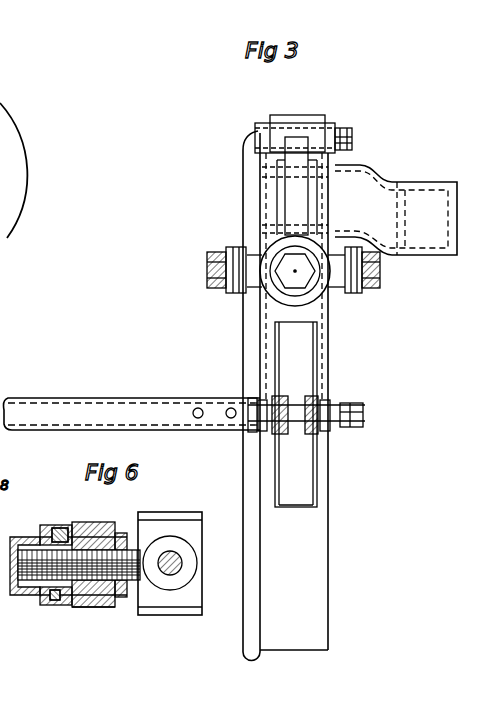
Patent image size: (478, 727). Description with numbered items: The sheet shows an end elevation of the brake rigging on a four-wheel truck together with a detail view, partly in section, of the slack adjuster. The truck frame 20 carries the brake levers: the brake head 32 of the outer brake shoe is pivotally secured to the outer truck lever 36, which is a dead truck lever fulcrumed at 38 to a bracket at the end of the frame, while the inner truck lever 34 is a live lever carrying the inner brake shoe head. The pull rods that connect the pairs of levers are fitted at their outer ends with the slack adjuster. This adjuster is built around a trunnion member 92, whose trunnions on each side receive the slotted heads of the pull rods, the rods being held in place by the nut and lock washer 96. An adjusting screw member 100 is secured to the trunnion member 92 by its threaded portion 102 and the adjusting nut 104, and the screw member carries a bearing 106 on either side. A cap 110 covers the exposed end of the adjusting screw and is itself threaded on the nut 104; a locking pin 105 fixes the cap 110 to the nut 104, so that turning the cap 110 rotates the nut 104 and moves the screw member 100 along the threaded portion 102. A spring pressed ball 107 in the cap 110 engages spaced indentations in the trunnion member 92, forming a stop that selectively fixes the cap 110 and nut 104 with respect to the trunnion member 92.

In FIG. 3, the truck frame 20 is at (425, 185).
In FIG. 3, the brake head 32 is at (305, 490).
In FIG. 3, the inner truck lever 34 is at (318, 603).
In FIG. 3, the outer truck lever 36 is at (315, 313).
In FIG. 3, the fulcrum 38 is at (336, 130).
In FIG. 3, the trunnion member 92 is at (270, 298).
In FIG. 6, the trunnion member 92 is at (88, 607).
In FIG. 3, the nut and lock washer 96 is at (215, 285).
In FIG. 6, the adjusting screw member 100 is at (185, 578).
In FIG. 6, the threaded portion 102 is at (128, 598).
In FIG. 6, the adjusting nut 104 is at (112, 526).
In FIG. 6, the locking pin 105 is at (55, 603).
In FIG. 6, the bearing 106 is at (178, 552).
In FIG. 6, the spring pressed ball 107 is at (62, 525).
In FIG. 3, the cap 110 is at (290, 122).
In FIG. 6, the cap 110 is at (36, 597).